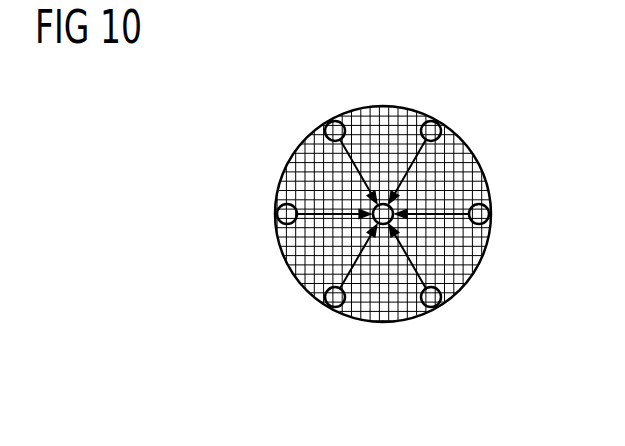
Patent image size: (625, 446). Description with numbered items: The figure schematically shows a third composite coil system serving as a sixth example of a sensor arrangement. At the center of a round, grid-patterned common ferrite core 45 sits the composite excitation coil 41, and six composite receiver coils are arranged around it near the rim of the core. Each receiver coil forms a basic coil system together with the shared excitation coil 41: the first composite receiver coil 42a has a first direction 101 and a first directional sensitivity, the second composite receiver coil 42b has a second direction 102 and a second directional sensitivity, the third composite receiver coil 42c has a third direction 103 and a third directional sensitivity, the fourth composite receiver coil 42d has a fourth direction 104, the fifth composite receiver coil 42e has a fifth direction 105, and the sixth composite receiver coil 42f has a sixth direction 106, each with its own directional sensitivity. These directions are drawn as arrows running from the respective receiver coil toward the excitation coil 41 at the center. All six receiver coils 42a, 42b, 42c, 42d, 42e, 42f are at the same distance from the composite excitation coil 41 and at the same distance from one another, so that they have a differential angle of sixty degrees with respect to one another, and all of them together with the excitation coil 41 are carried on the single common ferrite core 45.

The common ferrite core 45 is at (384, 120).
The composite excitation coil 41 is at (393, 206).
The first composite receiver coil 42a is at (437, 127).
The second composite receiver coil 42b is at (490, 217).
The third composite receiver coil 42c is at (440, 307).
The fourth composite receiver coil 42d is at (330, 303).
The fifth composite receiver coil 42e is at (278, 215).
The sixth composite receiver coil 42f is at (329, 123).
The first direction 101 is at (418, 162).
The second direction 102 is at (453, 217).
The third direction 103 is at (415, 273).
The fourth direction 104 is at (352, 275).
The fifth direction 105 is at (308, 220).
The sixth direction 106 is at (347, 156).